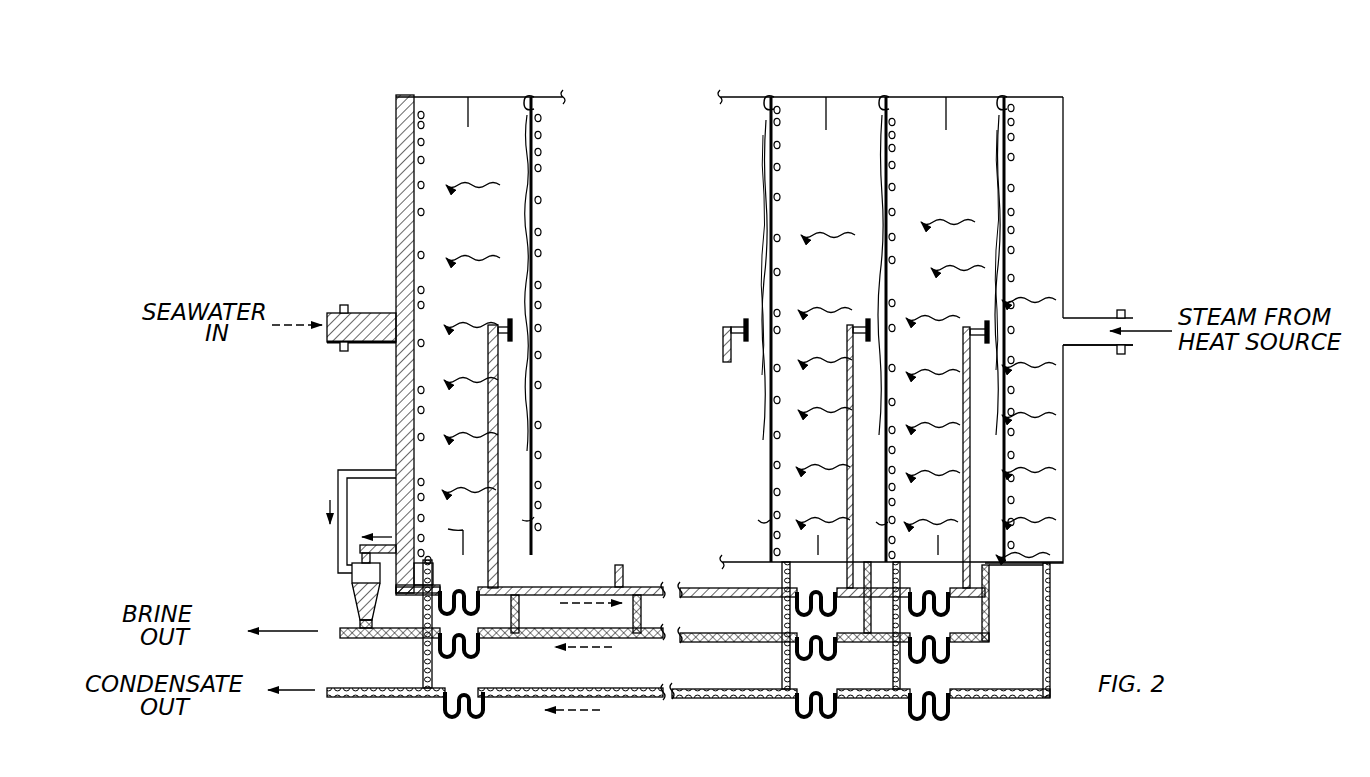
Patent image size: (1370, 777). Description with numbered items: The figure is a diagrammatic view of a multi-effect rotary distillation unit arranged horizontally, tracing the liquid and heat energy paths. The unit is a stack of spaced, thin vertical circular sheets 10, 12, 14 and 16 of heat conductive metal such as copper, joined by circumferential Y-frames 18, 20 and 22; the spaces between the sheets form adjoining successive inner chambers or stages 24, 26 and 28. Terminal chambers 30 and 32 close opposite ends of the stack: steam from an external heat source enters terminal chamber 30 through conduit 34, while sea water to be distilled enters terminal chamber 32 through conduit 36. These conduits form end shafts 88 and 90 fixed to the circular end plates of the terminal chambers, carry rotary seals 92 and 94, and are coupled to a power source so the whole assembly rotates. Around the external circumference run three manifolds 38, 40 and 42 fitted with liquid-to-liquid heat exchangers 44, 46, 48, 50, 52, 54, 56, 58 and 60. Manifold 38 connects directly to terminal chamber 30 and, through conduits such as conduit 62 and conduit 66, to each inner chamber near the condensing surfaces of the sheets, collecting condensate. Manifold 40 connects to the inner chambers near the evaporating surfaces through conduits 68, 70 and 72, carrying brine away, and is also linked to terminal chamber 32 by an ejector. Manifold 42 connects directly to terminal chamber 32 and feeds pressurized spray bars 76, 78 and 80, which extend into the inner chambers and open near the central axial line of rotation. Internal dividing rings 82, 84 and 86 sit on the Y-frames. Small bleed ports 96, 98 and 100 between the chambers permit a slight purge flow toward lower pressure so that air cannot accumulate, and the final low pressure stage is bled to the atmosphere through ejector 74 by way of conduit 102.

The vertical circular sheet 10 is at (1005, 96).
The vertical circular sheet 12 is at (884, 96).
The vertical circular sheet 14 is at (770, 96).
The vertical circular sheet 16 is at (530, 95).
The Y-frame 18 is at (974, 97).
The Y-frame 20 is at (865, 97).
The Y-frame 22 is at (490, 96).
The inner chamber 24 is at (957, 197).
The inner chamber 26 is at (840, 197).
The inner chamber 28 is at (485, 233).
The terminal chamber 30 is at (1064, 178).
The terminal chamber 32 is at (400, 202).
The conduit 34 is at (1083, 322).
The conduit 36 is at (363, 311).
The manifold 38 is at (710, 699).
The manifold 40 is at (700, 643).
The manifold 42 is at (705, 597).
The liquid-to-liquid heat exchanger 44 is at (950, 714).
The liquid-to-liquid heat exchanger 46 is at (950, 660).
The liquid-to-liquid heat exchanger 48 is at (948, 610).
The liquid-to-liquid heat exchanger 50 is at (838, 712).
The liquid-to-liquid heat exchanger 52 is at (838, 655).
The liquid-to-liquid heat exchanger 54 is at (835, 612).
The liquid-to-liquid heat exchanger 56 is at (479, 713).
The liquid-to-liquid heat exchanger 58 is at (478, 655).
The liquid-to-liquid heat exchanger 60 is at (530, 603).
The conduit 62 is at (892, 672).
The conduit 66 is at (423, 660).
The conduit 68 is at (990, 595).
The conduit 70 is at (883, 597).
The conduit 72 is at (519, 603).
The ejector 74 is at (352, 600).
The pressurized spray bar 76 is at (963, 440).
The pressurized spray bar 78 is at (847, 432).
The pressurized spray bar 80 is at (488, 445).
The ring 82 is at (937, 545).
The ring 84 is at (818, 538).
The ring 86 is at (444, 529).
The end shaft 88 is at (1084, 350).
The end shaft 90 is at (382, 345).
The rotary seal 92 is at (1125, 352).
The rotary seal 94 is at (342, 350).
The bleed port 96 is at (885, 520).
The bleed port 98 is at (758, 519).
The bleed port 100 is at (528, 520).
The conduit 102 is at (340, 492).